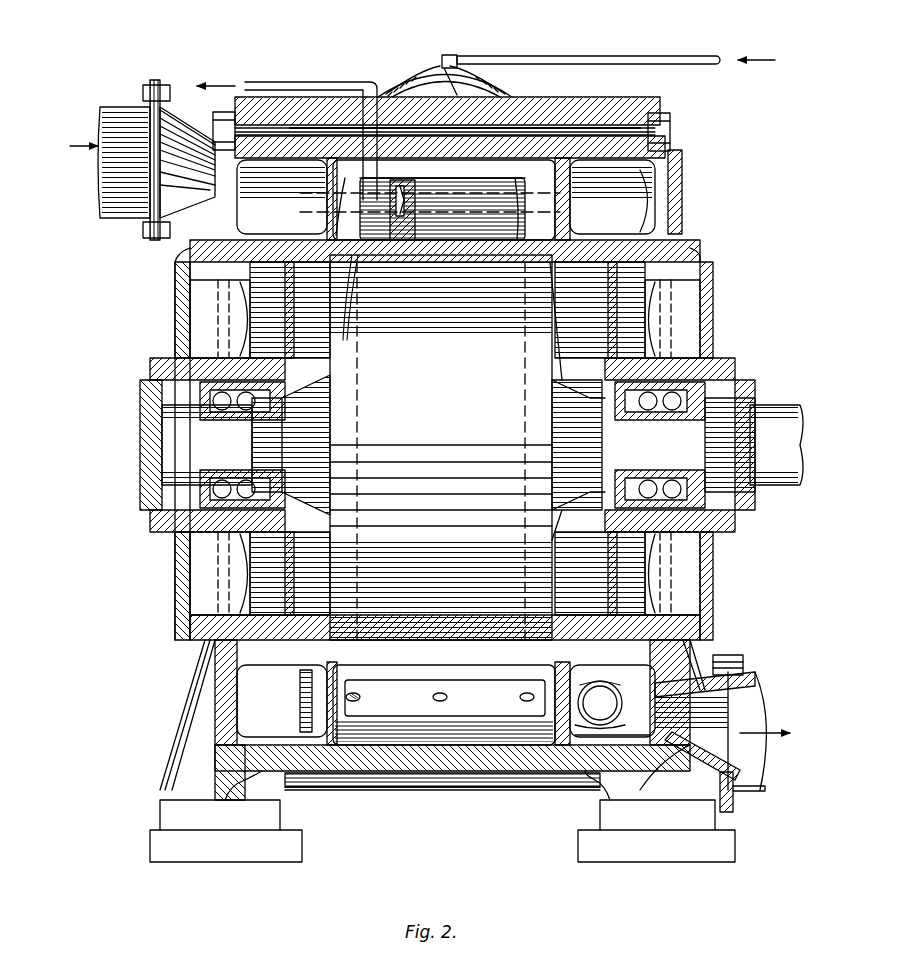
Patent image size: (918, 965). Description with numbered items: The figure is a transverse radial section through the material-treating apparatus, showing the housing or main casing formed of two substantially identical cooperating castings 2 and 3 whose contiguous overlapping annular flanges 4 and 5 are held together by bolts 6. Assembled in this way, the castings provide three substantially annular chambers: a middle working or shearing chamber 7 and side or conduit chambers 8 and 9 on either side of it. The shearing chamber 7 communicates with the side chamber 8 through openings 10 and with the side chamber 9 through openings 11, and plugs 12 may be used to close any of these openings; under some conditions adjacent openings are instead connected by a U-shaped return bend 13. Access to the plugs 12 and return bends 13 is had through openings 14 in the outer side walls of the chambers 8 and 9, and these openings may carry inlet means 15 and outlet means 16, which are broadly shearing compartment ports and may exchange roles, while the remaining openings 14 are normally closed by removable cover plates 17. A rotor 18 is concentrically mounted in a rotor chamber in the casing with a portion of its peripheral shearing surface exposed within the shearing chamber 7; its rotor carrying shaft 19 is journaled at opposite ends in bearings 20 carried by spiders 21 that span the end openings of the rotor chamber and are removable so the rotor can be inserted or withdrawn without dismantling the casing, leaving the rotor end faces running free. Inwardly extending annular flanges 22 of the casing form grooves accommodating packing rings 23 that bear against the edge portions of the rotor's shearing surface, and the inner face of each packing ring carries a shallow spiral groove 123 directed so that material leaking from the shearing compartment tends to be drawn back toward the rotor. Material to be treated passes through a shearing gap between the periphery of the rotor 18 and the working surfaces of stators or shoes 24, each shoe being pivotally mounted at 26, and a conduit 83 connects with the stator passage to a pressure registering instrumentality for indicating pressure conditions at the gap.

The casting 2 is at (214, 760).
The casting 3 is at (596, 800).
The annular flange 4 is at (450, 772).
The annular flange 5 is at (435, 145).
The bolts 6 is at (640, 125).
The working or shearing chamber 7 is at (488, 160).
The side or conduit chamber 8 is at (282, 448).
The side or conduit chamber 9 is at (645, 205).
The openings 10 is at (282, 193).
The openings 11 is at (600, 703).
The plugs 12 is at (292, 700).
The return bend 13 is at (612, 705).
The openings 14 is at (648, 738).
The inlet means 15 is at (98, 145).
The outlet means 16 is at (750, 790).
The cover plates 17 is at (683, 175).
The rotor 18 is at (446, 447).
The rotor carrying shaft 19 is at (170, 436).
The bearings 20 is at (166, 396).
The spiders 21 is at (176, 310).
The annular flanges 22 is at (345, 235).
The packing rings 23 is at (520, 240).
The stator or shoe 24 is at (432, 185).
The pivot mounting 26 is at (402, 211).
The conduit 83 is at (310, 86).
The spiral groove 123 is at (362, 309).